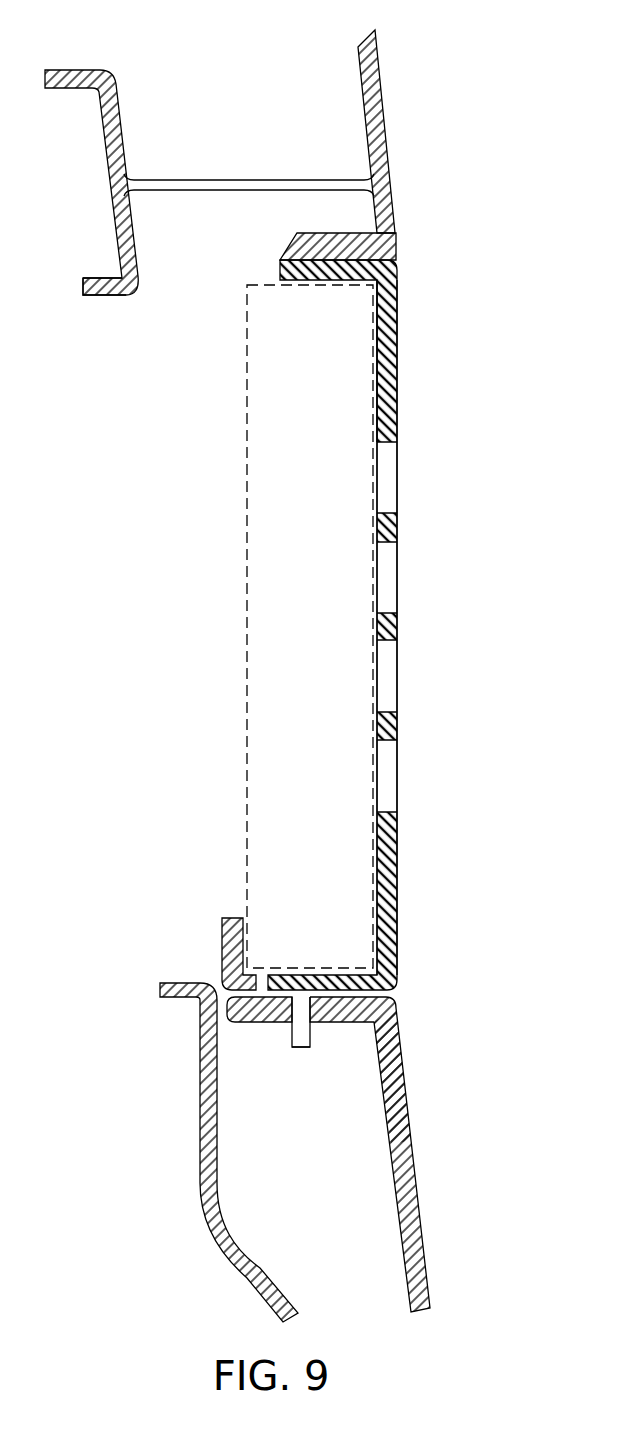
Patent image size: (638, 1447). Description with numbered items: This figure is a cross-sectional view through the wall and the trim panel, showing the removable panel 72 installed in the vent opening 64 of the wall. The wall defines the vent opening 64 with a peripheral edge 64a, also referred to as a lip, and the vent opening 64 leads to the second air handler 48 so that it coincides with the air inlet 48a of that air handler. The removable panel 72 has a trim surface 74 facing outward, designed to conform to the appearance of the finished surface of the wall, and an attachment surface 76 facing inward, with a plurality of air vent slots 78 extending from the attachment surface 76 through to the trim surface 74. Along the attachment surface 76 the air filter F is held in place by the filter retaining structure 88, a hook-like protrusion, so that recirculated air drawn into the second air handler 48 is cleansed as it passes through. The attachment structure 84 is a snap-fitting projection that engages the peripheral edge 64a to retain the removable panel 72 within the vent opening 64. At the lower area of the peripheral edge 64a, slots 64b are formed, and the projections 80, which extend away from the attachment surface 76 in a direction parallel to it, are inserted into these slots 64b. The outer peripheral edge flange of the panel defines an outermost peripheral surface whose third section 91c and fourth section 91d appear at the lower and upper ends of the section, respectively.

The second air handler 48 is at (77, 70).
The air inlet 48a is at (102, 297).
The attachment structure 84 is at (294, 262).
The fourth section 91d is at (381, 247).
The attachment surface 76 is at (376, 332).
The trim surface 74 is at (398, 335).
The air vent slots 78 is at (387, 478).
The removable panel 72 is at (397, 882).
The filter F is at (247, 462).
The filter retaining structure 88 is at (222, 942).
The vent opening 64 is at (319, 1035).
The peripheral edge 64a is at (333, 1010).
The slots 64b is at (301, 1048).
The projections 80 is at (293, 1040).
The third section 91c is at (391, 1015).